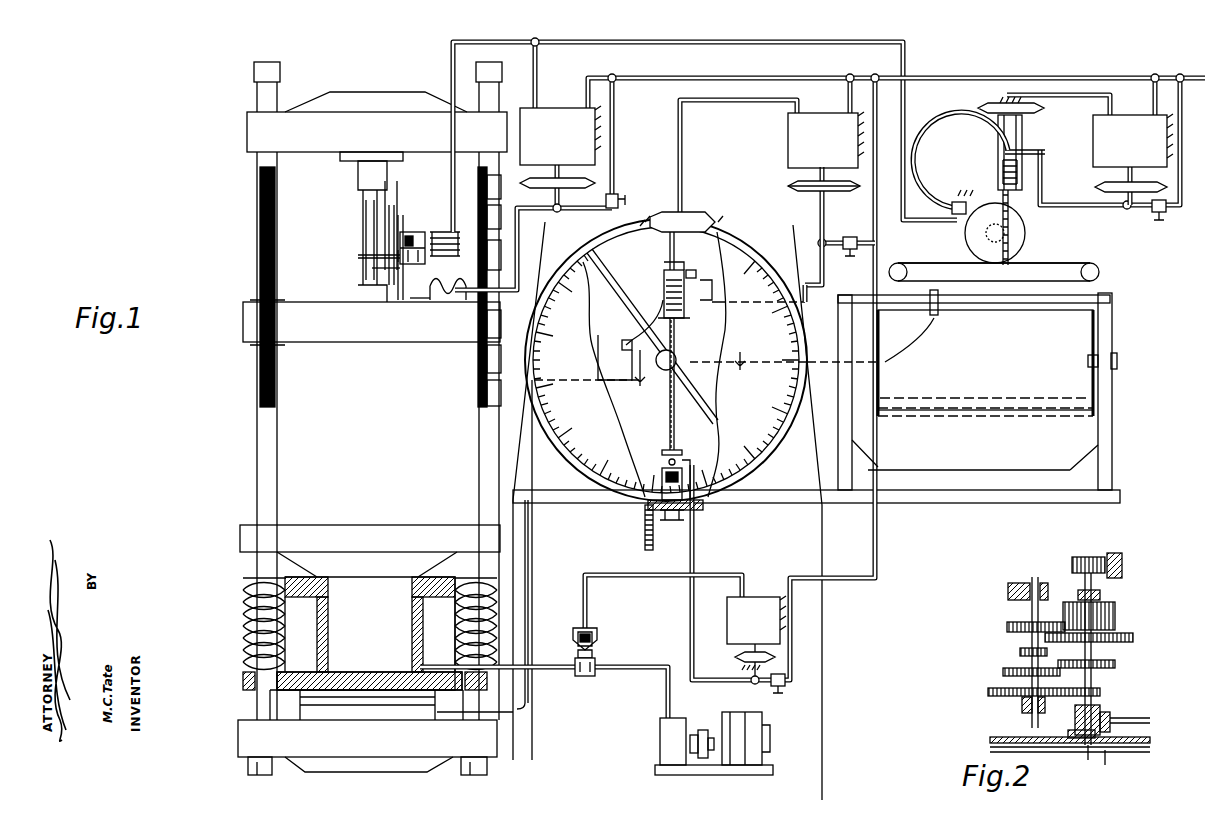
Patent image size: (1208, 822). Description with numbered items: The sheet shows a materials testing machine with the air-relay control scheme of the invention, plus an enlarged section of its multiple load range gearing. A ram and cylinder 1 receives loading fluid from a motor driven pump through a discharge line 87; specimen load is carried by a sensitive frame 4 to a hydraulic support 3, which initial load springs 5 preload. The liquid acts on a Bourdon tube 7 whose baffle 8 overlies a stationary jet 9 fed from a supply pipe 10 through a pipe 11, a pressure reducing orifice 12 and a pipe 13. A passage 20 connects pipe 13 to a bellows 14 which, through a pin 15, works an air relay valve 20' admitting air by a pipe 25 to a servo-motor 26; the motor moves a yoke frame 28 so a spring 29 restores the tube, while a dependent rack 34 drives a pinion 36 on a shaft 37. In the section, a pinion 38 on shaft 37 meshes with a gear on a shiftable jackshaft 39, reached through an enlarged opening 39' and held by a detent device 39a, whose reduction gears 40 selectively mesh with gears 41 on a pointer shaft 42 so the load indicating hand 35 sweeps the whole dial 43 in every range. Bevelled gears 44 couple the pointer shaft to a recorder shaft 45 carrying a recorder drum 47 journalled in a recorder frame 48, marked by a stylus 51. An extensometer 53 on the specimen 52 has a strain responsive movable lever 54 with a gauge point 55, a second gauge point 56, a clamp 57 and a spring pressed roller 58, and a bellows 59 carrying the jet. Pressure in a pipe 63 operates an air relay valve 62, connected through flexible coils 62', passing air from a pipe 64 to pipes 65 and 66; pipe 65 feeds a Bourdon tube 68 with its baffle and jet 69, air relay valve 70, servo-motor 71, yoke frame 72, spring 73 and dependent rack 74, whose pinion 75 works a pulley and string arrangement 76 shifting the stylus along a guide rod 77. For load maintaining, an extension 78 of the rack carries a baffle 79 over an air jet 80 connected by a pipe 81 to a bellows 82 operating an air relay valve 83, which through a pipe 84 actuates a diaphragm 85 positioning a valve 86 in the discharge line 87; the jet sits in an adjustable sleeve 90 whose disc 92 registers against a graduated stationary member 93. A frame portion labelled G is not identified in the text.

In FIG. 1, the ram and cylinder 1 is at (306, 621).
In FIG. 1, the hydraulic support 3 is at (305, 708).
In FIG. 1, the sensitive frame 4 is at (246, 567).
In FIG. 1, the initial load springs 5 is at (240, 612).
In FIG. 1, the Bourdon tube 7 is at (650, 244).
In FIG. 1, the baffle 8 is at (695, 271).
In FIG. 1, the stationary jet 9 is at (710, 291).
In FIG. 1, the supply pipe 10 is at (848, 86).
In FIG. 1, the pipe 11 is at (876, 170).
In FIG. 1, the pressure reducing orifice 12 is at (850, 238).
In FIG. 1, the pipe 13 is at (764, 282).
In FIG. 1, the bellows 14 is at (800, 189).
In FIG. 1, the pin 15 is at (808, 176).
In FIG. 1, the passage 20 is at (811, 226).
In FIG. 1, the air relay valve 20' is at (806, 140).
In FIG. 1, the pipe 25 is at (758, 101).
In FIG. 1, the servo-motor 26 is at (690, 222).
In FIG. 1, the yoke frame 28 is at (664, 279).
In FIG. 1, the spring 29 is at (665, 311).
In FIG. 1, the dependent rack 34 is at (676, 333).
In FIG. 2, the dependent rack 34 is at (1113, 552).
In FIG. 1, the load indicating hand 35 is at (662, 298).
In FIG. 2, the load indicating hand 35 is at (1105, 760).
In FIG. 1, the pinion 36 is at (660, 370).
In FIG. 2, the pinion 36 is at (1090, 557).
In FIG. 2, the shaft 37 is at (1092, 588).
In FIG. 2, the pinion 38 is at (1116, 613).
In FIG. 2, the jackshaft 39 is at (1010, 652).
In FIG. 2, the detent device 39a is at (1025, 582).
In FIG. 2, the enlarged opening 39' is at (1020, 707).
In FIG. 2, the reduction gears 40 is at (990, 686).
In FIG. 2, the gears 41 is at (1110, 664).
In FIG. 2, the pointer shaft 42 is at (1098, 705).
In FIG. 1, the dial 43 is at (608, 403).
In FIG. 2, the dial 43 is at (1010, 738).
In FIG. 1, the bevelled gears 44 is at (680, 358).
In FIG. 2, the bevelled gears 44 is at (1070, 735).
In FIG. 1, the recorder shaft 45 is at (830, 360).
In FIG. 2, the recorder shaft 45 is at (1136, 720).
In FIG. 1, the recorder drum 47 is at (1058, 418).
In FIG. 1, the recorder frame 48 is at (1108, 420).
In FIG. 1, the stylus 51 is at (940, 318).
In FIG. 1, the specimen 52 is at (368, 235).
In FIG. 1, the extensometer 53 is at (412, 216).
In FIG. 1, the strain responsive movable lever 54 is at (396, 212).
In FIG. 1, the gauge point 55 is at (388, 200).
In FIG. 1, the gauge point 56 is at (372, 268).
In FIG. 1, the clamp 57 is at (366, 256).
In FIG. 1, the spring pressed roller 58 is at (364, 204).
In FIG. 1, the bellows 59 is at (411, 248).
In FIG. 1, the air relay valve 62 is at (560, 138).
In FIG. 1, the coils 62' is at (435, 258).
In FIG. 1, the pipe 63 is at (410, 298).
In FIG. 1, the pipe 64 is at (588, 84).
In FIG. 1, the pipe 65 is at (538, 67).
In FIG. 1, the pipe 66 is at (474, 42).
In FIG. 1, the Bourdon tube 68 is at (912, 165).
In FIG. 1, the baffle and jet 69 is at (1048, 151).
In FIG. 1, the air relay valve 70 is at (1094, 155).
In FIG. 1, the servo-motor 71 is at (980, 108).
In FIG. 1, the yoke frame 72 is at (1000, 146).
In FIG. 1, the spring 73 is at (1000, 175).
In FIG. 1, the dependent rack 74 is at (1002, 193).
In FIG. 1, the pinion 75 is at (985, 237).
In FIG. 1, the pulley and string arrangement 76 is at (972, 265).
In FIG. 1, the guide rod 77 is at (984, 296).
In FIG. 1, the extension 78 is at (670, 432).
In FIG. 1, the baffle 79 is at (680, 451).
In FIG. 1, the air jet 80 is at (668, 462).
In FIG. 1, the pipe 81 is at (692, 554).
In FIG. 1, the bellows 82 is at (740, 657).
In FIG. 1, the air relay valve 83 is at (728, 617).
In FIG. 1, the pipe 84 is at (628, 575).
In FIG. 1, the diaphragm 85 is at (576, 630).
In FIG. 1, the valve 86 is at (583, 676).
In FIG. 1, the discharge line 87 is at (630, 667).
In FIG. 1, the sleeve 90 is at (675, 485).
In FIG. 1, the disc 92 is at (676, 520).
In FIG. 1, the graduated stationary member 93 is at (645, 531).
In FIG. 1, the frame G is at (531, 554).